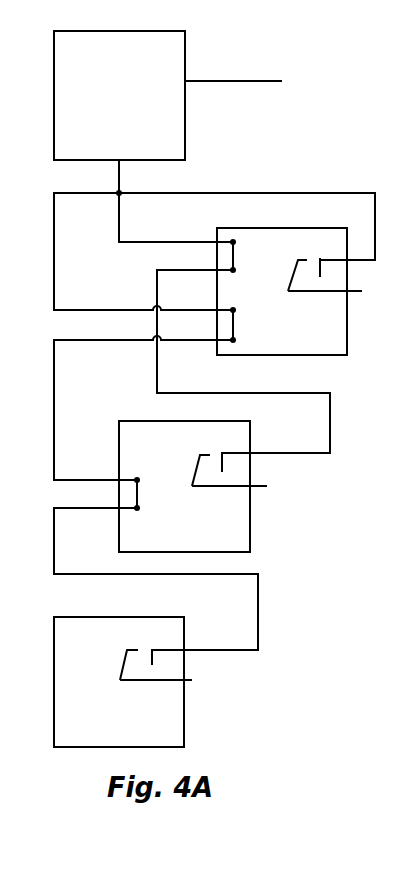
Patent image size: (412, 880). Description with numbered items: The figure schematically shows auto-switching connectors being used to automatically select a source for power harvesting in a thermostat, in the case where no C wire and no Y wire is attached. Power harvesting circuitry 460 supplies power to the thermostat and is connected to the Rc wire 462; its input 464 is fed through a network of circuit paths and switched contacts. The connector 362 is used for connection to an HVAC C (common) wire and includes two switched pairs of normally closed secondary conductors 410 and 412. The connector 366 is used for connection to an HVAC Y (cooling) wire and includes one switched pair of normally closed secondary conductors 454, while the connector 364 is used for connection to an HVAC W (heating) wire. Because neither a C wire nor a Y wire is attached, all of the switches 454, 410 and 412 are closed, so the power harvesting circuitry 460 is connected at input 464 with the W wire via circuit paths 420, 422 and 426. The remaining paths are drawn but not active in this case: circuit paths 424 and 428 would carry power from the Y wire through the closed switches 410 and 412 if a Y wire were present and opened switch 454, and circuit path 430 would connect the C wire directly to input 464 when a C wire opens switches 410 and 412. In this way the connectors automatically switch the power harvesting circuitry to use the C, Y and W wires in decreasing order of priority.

The power harvesting circuitry 460 is at (101, 110).
The Rc wire 462 is at (230, 81).
The input 464 is at (119, 173).
The circuit path 430 is at (317, 193).
The circuit path 428 is at (119, 213).
The circuit path 426 is at (54, 237).
The switched pair of normally closed secondary conductors 412 is at (235, 277).
The connector 362 is at (279, 346).
The switched pair of normally closed secondary conductors 410 is at (244, 345).
The circuit path 422 is at (54, 403).
The circuit path 424 is at (330, 427).
The connector 366 is at (183, 540).
The switched pair of normally closed secondary conductors 454 is at (139, 527).
The circuit path 420 is at (258, 610).
The connector 364 is at (107, 735).